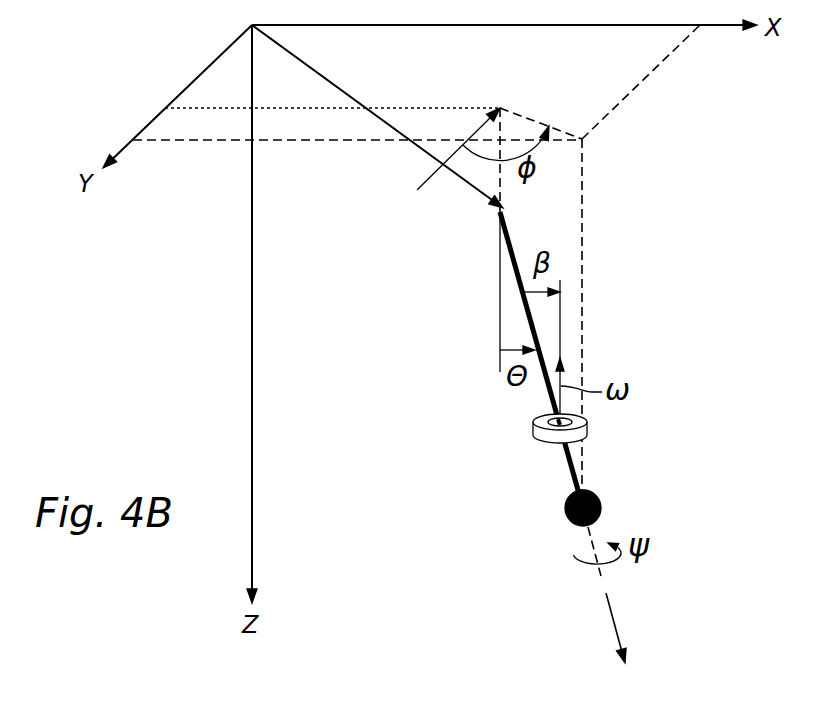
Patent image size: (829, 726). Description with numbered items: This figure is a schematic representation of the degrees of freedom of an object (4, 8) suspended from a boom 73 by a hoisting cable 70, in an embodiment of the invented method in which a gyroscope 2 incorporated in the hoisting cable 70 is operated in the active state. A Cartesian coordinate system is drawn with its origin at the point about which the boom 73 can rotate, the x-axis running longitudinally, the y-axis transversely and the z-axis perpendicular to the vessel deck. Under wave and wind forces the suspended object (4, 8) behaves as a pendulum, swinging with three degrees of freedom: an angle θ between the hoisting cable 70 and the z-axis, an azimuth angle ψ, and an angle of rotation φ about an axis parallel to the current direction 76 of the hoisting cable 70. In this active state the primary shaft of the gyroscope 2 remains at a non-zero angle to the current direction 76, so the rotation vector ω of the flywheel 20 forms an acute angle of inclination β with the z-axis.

The gyroscope 2 is at (600, 430).
The object 4 is at (526, 528).
The object 8 is at (566, 518).
The flywheel 20 is at (532, 428).
The hoisting cable 70 is at (515, 266).
The boom 73 is at (372, 118).
The current direction 76 is at (613, 614).